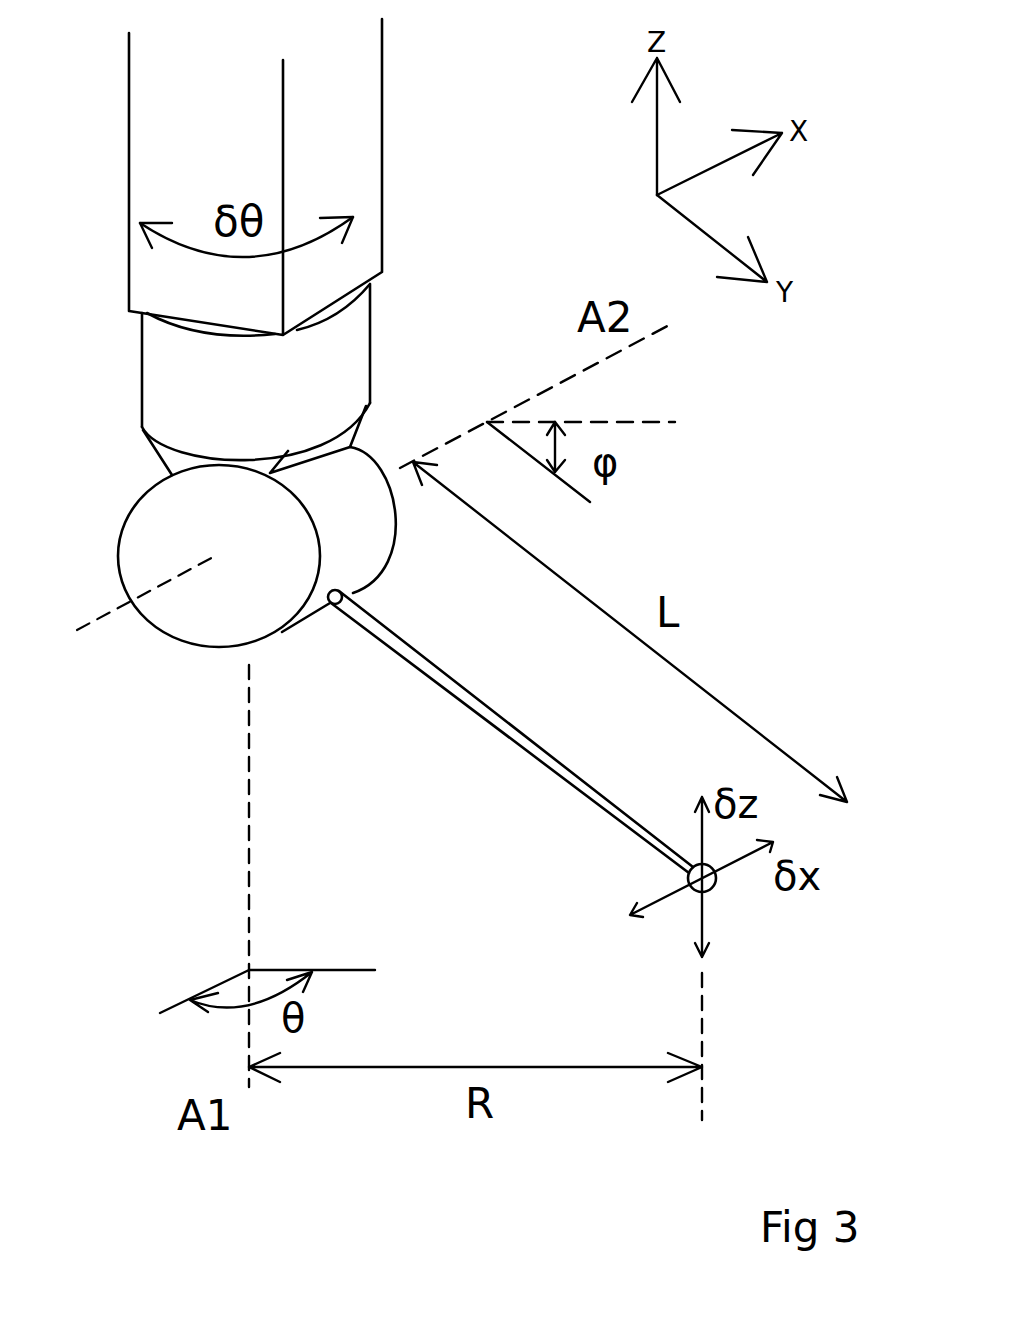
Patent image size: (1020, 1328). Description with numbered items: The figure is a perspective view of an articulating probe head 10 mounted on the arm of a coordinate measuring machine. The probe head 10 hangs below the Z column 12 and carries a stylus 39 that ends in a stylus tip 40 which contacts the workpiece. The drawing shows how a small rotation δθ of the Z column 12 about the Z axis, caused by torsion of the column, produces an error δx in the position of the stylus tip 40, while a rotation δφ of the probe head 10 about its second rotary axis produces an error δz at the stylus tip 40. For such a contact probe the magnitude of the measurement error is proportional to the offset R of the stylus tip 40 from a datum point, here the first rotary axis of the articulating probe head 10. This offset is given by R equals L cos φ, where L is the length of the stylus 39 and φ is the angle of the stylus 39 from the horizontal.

The articulating probe head 10 is at (118, 450).
The Z column 12 is at (363, 128).
The stylus 39 is at (553, 743).
The stylus tip 40 is at (701, 897).